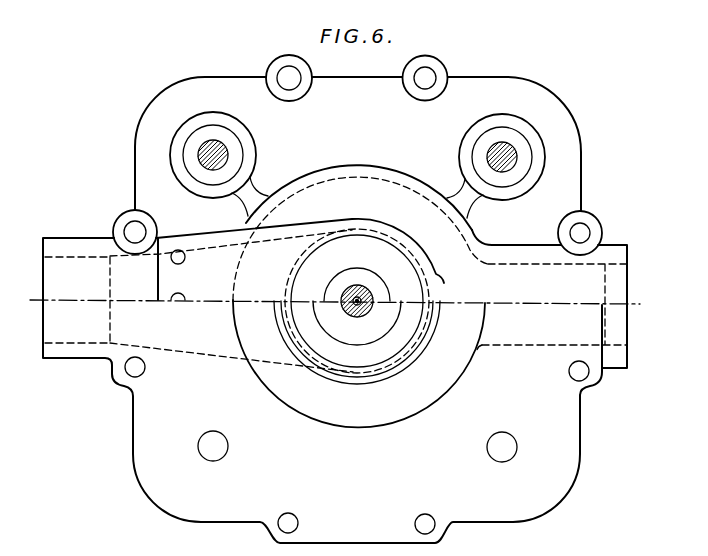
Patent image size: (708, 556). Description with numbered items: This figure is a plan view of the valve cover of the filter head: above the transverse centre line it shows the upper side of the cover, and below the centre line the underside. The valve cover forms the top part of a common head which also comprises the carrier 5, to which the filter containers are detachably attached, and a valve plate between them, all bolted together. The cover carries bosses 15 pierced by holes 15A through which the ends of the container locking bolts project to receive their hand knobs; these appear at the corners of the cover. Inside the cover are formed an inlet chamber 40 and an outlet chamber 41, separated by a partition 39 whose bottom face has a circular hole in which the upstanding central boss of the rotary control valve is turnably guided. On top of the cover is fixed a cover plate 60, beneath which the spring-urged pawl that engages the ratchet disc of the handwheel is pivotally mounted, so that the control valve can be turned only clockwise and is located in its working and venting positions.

The carrier 5 is at (562, 183).
The boss 15 is at (247, 171).
The hole 15A is at (222, 147).
The partition 39 is at (398, 368).
The inlet chamber 40 is at (380, 418).
The outlet chamber 41 is at (197, 270).
The cover plate 60 is at (294, 248).